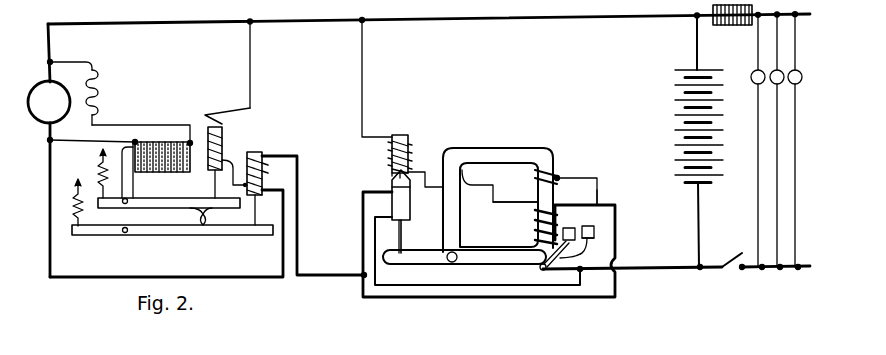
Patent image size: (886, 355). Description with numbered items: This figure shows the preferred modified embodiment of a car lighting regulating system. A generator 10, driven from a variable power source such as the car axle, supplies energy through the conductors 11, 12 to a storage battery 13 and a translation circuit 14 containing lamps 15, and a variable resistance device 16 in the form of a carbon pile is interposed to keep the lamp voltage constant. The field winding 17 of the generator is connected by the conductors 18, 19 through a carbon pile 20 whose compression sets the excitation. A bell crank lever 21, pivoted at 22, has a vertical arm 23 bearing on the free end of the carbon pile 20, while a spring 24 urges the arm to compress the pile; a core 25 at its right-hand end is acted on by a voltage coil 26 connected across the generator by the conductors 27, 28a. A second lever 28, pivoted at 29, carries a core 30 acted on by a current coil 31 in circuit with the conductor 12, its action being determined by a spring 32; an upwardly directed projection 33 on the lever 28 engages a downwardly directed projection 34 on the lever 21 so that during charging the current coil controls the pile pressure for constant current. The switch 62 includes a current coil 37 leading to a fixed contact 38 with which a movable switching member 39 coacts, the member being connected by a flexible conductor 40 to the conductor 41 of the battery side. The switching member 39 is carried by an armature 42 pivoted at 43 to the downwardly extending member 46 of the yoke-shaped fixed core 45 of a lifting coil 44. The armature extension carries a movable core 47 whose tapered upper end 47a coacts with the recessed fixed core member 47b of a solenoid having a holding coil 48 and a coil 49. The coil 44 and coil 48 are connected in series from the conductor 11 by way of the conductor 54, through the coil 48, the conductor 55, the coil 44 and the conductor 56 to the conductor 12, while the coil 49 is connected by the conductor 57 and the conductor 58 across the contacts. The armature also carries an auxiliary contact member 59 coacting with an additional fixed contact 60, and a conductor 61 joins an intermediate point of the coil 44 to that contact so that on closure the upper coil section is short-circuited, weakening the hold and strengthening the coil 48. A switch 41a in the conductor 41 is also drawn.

The generator 10 is at (43, 113).
The conductor 11 is at (450, 21).
The conductor 12 is at (278, 278).
The storage battery 13 is at (676, 113).
The translation circuit 14 is at (807, 140).
The lamps 15 is at (774, 84).
The variable resistance device 16 is at (733, 26).
The field winding 17 is at (100, 78).
The conductor 18 is at (123, 122).
The conductor 19 is at (88, 140).
The carbon pile 20 is at (164, 142).
The bell crank lever 21 is at (172, 202).
The pivot 22 is at (124, 204).
The vertical arm 23 is at (133, 186).
The spring 24 is at (99, 173).
The core 25 is at (218, 140).
The voltage coil 26 is at (224, 122).
The conductor 27 is at (250, 63).
The lever 28 is at (265, 236).
The conductor 28a is at (250, 160).
The pivot 29 is at (125, 233).
The core 30 is at (262, 156).
The current coil 31 is at (265, 170).
The spring 32 is at (77, 193).
The upwardly directed projection 33 is at (204, 232).
The downwardly directed projection 34 is at (196, 220).
The current coil 37 is at (533, 223).
The fixed contact 38 is at (576, 231).
The movable switching member 39 is at (594, 246).
The flexible conductor 40 is at (541, 270).
The conductor 41 is at (713, 271).
The switch 41a is at (741, 252).
The armature 42 is at (488, 255).
The pivot 43 is at (447, 261).
The coil 44 is at (537, 176).
The fixed core 45 is at (545, 157).
The downwardly extending member 46 is at (453, 218).
The movable core 47 is at (392, 203).
The tapered upper end 47a is at (393, 172).
The fixed core member 47b is at (410, 153).
The holding coil 48 is at (402, 135).
The coil 49 is at (410, 208).
The conductor 54 is at (363, 67).
The conductor 55 is at (516, 201).
The conductor 56 is at (590, 169).
The conductor 57 is at (361, 243).
The conductor 58 is at (440, 287).
The auxiliary contact member 59 is at (580, 251).
The fixed contact 60 is at (595, 232).
The conductor 61 is at (600, 196).
The switch 62 is at (527, 138).